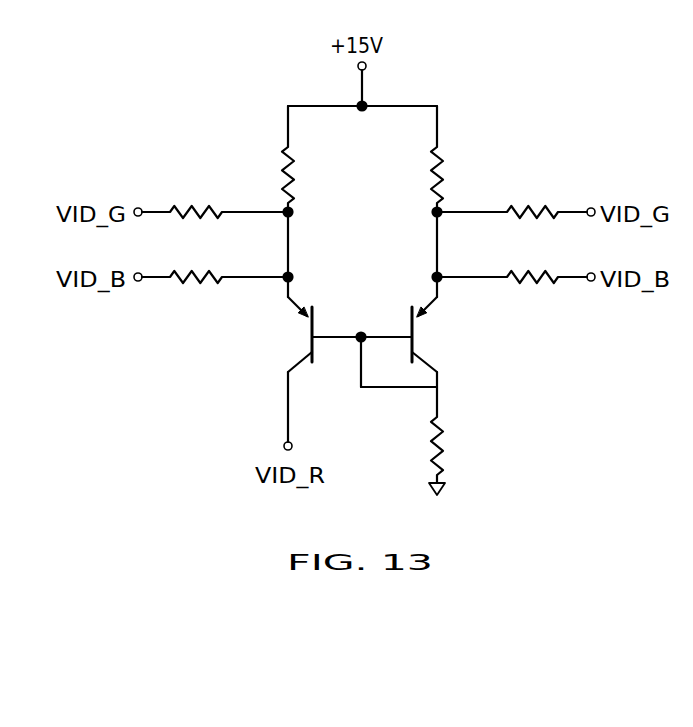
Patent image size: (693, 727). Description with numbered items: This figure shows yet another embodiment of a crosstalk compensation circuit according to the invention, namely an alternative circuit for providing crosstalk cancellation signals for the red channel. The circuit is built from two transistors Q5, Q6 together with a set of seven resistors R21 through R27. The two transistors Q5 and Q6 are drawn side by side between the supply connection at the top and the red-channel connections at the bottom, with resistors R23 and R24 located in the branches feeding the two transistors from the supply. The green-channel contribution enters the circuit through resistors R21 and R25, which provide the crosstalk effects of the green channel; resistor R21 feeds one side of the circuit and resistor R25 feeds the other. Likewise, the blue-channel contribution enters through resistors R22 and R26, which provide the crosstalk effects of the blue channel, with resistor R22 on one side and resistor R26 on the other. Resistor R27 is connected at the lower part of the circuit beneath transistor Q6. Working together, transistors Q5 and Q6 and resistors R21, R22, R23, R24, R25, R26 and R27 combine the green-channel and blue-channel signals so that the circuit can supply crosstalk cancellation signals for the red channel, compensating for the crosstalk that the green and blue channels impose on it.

The resistor R21 is at (196, 230).
The resistor R22 is at (196, 295).
The resistor R23 is at (312, 175).
The resistor R24 is at (461, 175).
The resistor R25 is at (532, 230).
The resistor R26 is at (532, 295).
The resistor R27 is at (460, 446).
The transistor Q5 is at (291, 334).
The transistor Q6 is at (432, 334).